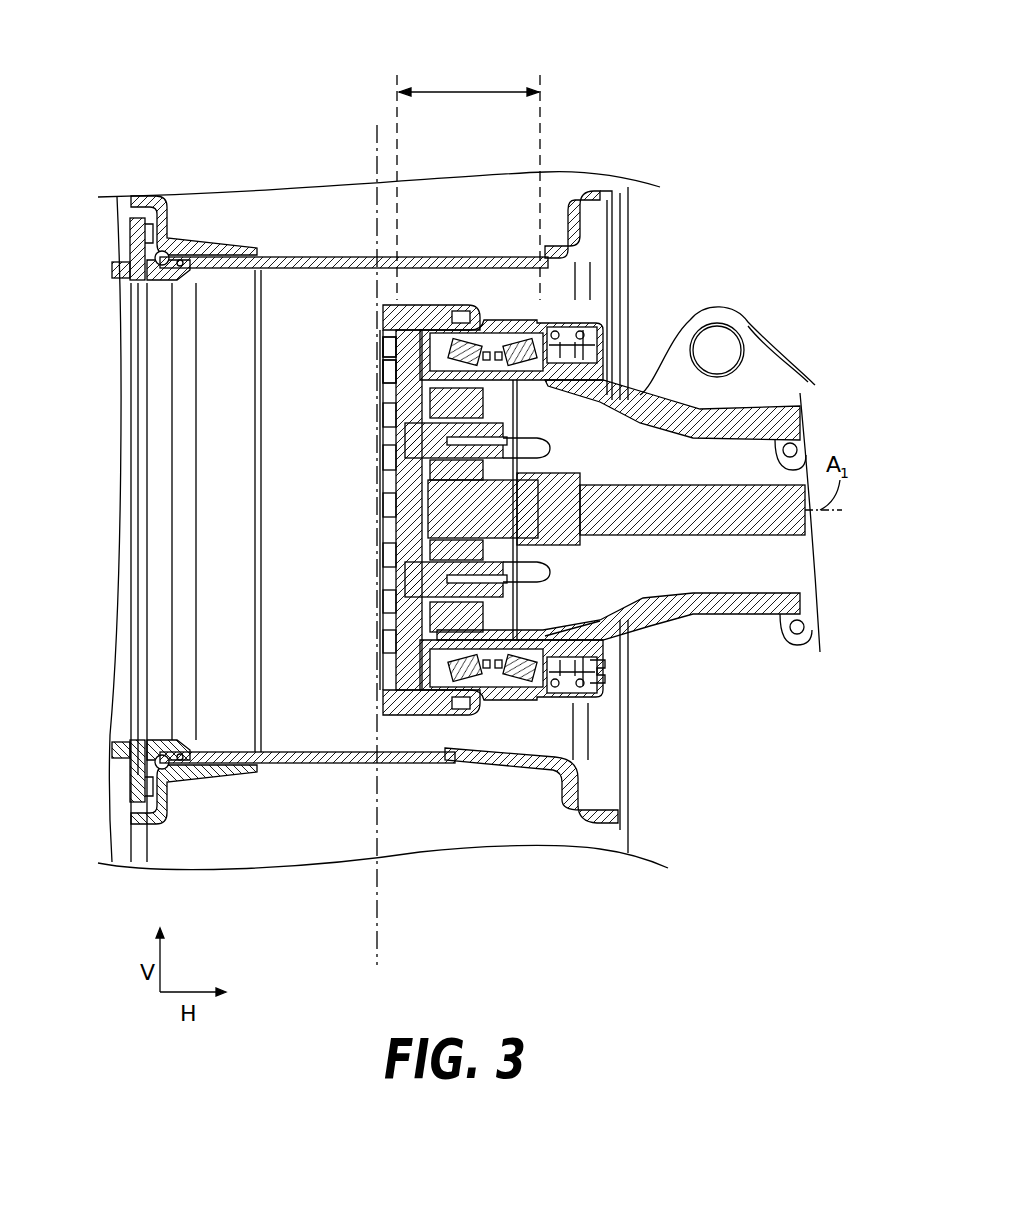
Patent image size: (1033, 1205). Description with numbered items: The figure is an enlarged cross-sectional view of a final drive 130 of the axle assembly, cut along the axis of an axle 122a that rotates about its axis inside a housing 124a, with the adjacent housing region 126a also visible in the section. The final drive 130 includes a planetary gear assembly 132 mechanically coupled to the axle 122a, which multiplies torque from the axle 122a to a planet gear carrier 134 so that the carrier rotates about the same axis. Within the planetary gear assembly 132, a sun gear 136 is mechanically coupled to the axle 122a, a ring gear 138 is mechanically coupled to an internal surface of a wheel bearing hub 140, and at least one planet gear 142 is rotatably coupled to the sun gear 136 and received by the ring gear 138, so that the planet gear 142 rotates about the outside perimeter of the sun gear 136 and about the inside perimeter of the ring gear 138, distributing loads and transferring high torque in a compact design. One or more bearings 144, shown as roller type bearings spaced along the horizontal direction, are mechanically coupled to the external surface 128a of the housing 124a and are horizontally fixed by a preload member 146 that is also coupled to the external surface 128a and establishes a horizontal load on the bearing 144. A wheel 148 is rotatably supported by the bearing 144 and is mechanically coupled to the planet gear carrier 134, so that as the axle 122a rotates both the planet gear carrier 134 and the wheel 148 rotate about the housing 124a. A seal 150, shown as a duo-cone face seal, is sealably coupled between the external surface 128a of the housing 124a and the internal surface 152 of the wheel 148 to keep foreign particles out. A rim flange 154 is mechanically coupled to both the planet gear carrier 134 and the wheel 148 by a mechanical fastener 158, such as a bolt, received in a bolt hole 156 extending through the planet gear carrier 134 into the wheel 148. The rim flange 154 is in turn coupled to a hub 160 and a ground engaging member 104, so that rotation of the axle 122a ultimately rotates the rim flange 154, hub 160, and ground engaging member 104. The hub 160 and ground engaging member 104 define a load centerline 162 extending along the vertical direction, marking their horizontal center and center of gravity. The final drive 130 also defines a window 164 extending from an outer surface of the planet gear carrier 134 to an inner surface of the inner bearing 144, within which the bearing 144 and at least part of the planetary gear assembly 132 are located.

The ground engaging member 104 is at (411, 830).
The axle 122a is at (692, 510).
The housing 124a is at (705, 613).
The axle housing 126a is at (628, 479).
The external surface 128a is at (655, 611).
The final drive 130 is at (697, 97).
The planetary gear assembly 132 is at (395, 526).
The planet gear carrier 134 is at (392, 368).
The sun gear 136 is at (457, 508).
The ring gear 138 is at (433, 392).
The wheel bearing hub 140 is at (552, 634).
The planet gear 142 is at (572, 335).
The bearing 144 is at (548, 360).
The preload member 146 is at (385, 350).
The wheel 148 is at (555, 246).
The seal 150 is at (573, 693).
The internal surface 152 is at (447, 710).
The rim flange 154 is at (388, 756).
The bolt hole 156 is at (383, 258).
The mechanical fastener 158 is at (385, 312).
The hub 160 is at (293, 690).
The load centerline 162 is at (397, 208).
The window 164 is at (469, 180).